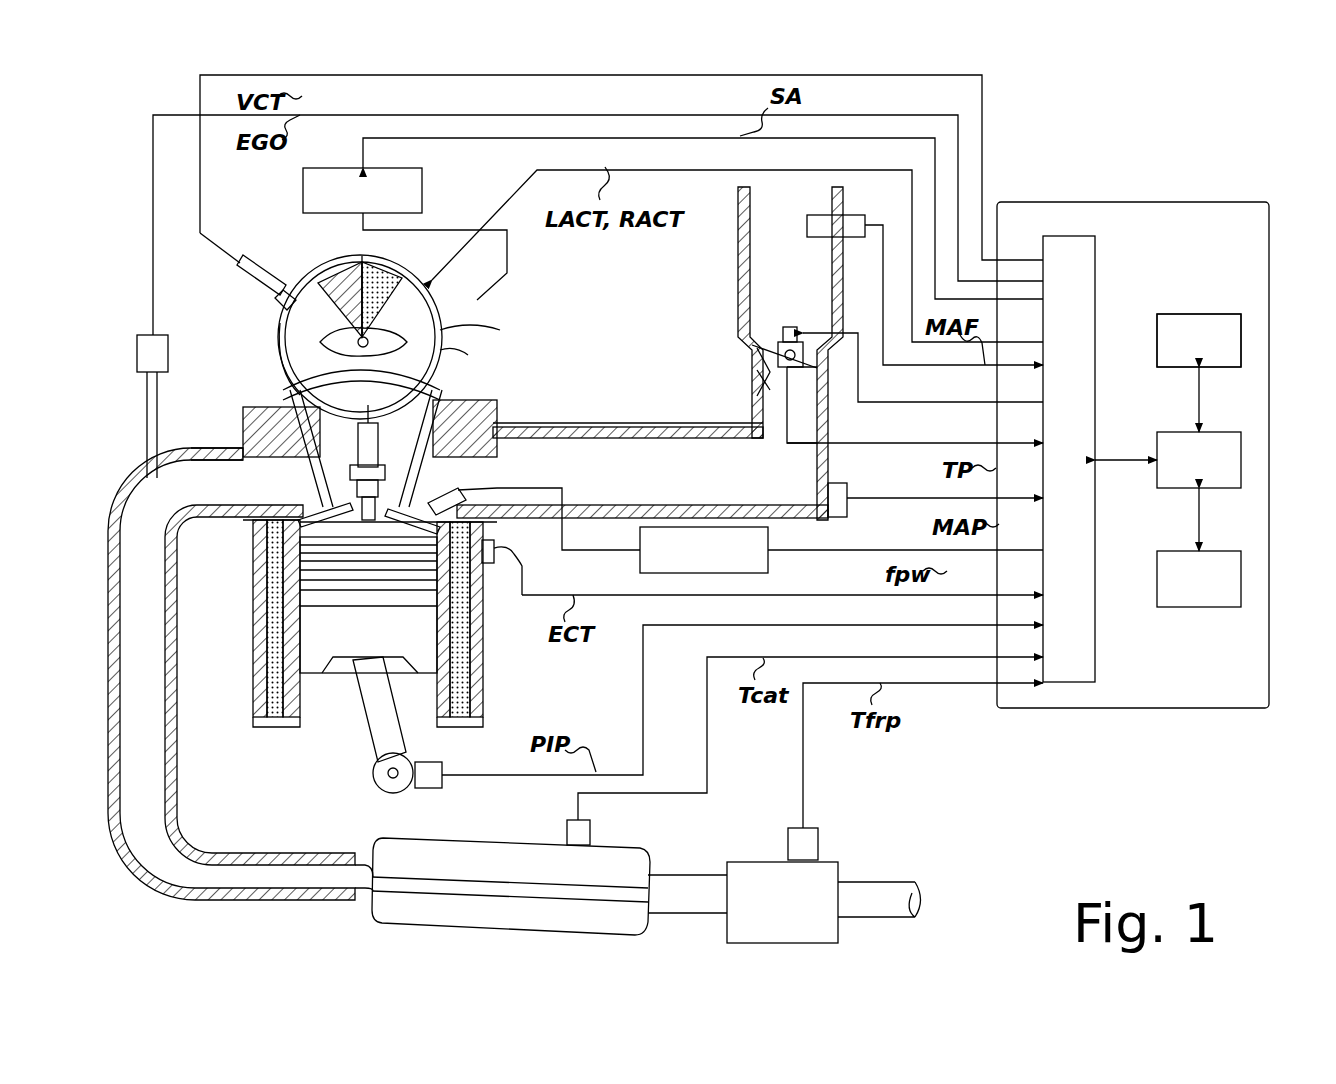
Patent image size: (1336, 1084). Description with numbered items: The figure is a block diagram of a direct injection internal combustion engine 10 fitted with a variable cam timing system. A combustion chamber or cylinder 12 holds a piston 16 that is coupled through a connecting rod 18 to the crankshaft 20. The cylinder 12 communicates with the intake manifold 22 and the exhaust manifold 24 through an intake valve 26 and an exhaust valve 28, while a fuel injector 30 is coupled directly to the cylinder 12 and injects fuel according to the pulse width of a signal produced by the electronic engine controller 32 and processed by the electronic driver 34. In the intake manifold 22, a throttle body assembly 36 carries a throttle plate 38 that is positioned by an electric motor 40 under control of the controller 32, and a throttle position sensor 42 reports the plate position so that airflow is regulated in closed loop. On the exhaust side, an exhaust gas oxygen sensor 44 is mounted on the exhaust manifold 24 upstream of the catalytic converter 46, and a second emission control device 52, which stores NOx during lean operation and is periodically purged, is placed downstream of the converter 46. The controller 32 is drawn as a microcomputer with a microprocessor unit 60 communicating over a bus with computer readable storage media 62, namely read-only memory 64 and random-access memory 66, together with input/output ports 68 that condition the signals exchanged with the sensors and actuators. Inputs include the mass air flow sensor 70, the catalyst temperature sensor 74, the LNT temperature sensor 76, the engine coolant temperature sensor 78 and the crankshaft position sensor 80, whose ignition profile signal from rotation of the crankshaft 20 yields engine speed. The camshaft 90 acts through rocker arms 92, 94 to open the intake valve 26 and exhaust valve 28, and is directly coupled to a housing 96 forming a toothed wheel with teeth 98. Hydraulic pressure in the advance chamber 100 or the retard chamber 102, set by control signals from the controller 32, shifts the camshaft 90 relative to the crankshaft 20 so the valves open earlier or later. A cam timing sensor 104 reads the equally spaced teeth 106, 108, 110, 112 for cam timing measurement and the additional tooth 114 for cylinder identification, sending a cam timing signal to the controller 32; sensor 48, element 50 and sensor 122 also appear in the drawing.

The engine 10 is at (548, 345).
The combustion chamber 12 is at (306, 578).
The piston 16 is at (372, 648).
The connecting rod 18 is at (403, 665).
The crankshaft 20 is at (374, 776).
The intake manifold 22 is at (765, 402).
The exhaust manifold 24 is at (131, 506).
The intake valve 26 is at (452, 496).
The exhaust valve 28 is at (294, 504).
The fuel injector 30 is at (516, 500).
The electronic engine controller 32 is at (1130, 200).
The electronic driver 34 is at (768, 560).
The throttle body assembly 36 is at (757, 380).
The throttle plate 38 is at (784, 345).
The electric motor 40 is at (792, 327).
The throttle position sensor 42 is at (760, 364).
The exhaust gas oxygen sensor 44 is at (137, 370).
The catalytic converter 46 is at (435, 822).
The spark plug 48 is at (364, 426).
The ignition system 50 is at (422, 190).
The emission control device 52 is at (752, 862).
The microprocessor unit 60 is at (1163, 432).
The computer readable storage media 62 is at (1262, 352).
The read-only memory 64 is at (1210, 314).
The random-access memory 66 is at (1163, 551).
The input/output ports 68 is at (1098, 270).
The mass air flow sensor 70 is at (825, 215).
The catalyst temperature sensor 74 is at (590, 838).
The LNT temperature sensor 76 is at (818, 845).
The engine coolant temperature sensor 78 is at (520, 566).
The crankshaft position sensor 80 is at (430, 764).
The camshaft 90 is at (290, 331).
The rocker arm 92 is at (292, 398).
The rocker arm 94 is at (440, 380).
The housing 96 is at (385, 280).
The teeth 98 is at (440, 310).
The advance chamber 100 is at (380, 305).
The retard chamber 102 is at (312, 288).
The cam timing sensor 104 is at (240, 264).
The tooth 106 is at (288, 352).
The tooth 108 is at (286, 304).
The tooth 110 is at (362, 268).
The tooth 112 is at (440, 340).
The tooth 114 is at (450, 408).
The manifold pressure sensor 122 is at (847, 496).